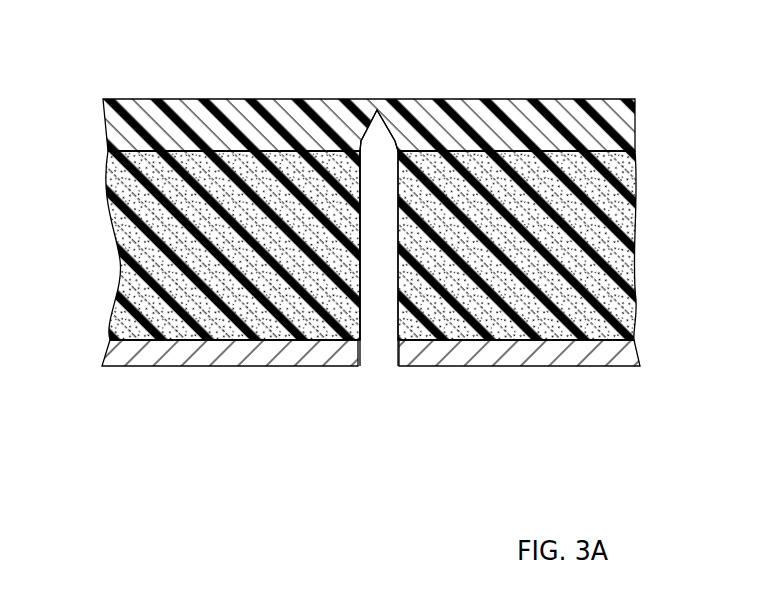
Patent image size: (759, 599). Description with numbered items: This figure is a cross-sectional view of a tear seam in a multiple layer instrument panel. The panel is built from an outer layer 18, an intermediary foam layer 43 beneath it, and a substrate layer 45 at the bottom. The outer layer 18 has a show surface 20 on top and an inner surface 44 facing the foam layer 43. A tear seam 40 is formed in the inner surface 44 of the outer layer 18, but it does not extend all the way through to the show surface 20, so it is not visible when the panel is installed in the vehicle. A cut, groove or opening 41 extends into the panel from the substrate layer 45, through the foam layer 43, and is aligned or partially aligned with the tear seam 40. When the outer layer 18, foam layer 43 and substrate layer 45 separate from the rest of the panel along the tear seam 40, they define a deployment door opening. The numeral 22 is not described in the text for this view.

The outer layer 18 is at (368, 92).
The show surface 20 is at (500, 99).
The bottom layer 22 is at (408, 372).
The tear seam 40 is at (365, 145).
The cut, groove or opening 41 is at (372, 225).
The foam layer 43 is at (409, 245).
The inner surface 44 is at (565, 152).
The substrate layer 45 is at (636, 343).